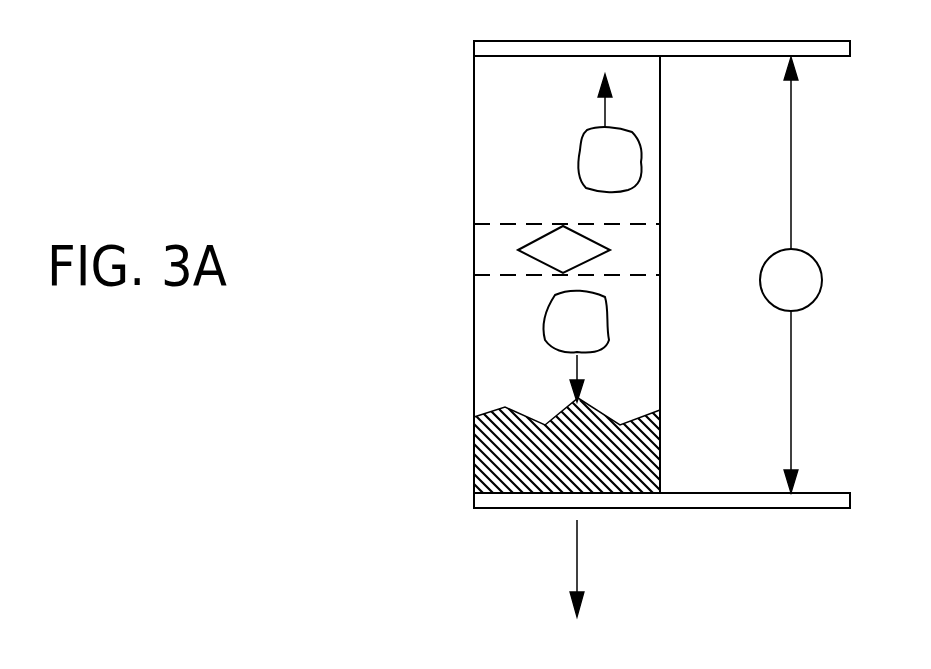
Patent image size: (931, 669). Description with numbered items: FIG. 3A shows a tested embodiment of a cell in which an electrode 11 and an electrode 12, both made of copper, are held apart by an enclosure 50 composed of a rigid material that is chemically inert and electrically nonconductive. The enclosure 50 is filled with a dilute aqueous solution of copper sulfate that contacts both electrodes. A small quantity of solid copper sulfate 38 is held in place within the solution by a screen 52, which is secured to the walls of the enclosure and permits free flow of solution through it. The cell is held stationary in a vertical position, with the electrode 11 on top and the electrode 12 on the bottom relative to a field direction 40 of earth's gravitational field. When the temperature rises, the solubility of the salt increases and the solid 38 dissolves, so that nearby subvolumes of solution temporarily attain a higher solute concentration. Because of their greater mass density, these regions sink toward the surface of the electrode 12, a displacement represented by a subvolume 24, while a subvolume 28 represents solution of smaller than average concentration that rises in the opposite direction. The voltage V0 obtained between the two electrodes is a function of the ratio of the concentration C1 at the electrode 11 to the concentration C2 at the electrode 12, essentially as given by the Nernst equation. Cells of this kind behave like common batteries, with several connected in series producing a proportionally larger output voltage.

The electrode 11 is at (697, 41).
The electrode 12 is at (690, 505).
The subvolume 24 is at (605, 307).
The subvolume 28 is at (641, 150).
The solid CuSO4 38 is at (605, 252).
The field direction 40 is at (577, 557).
The enclosure 50 is at (474, 365).
The screen 52 is at (522, 224).
The concentration at electrode 11 C1 is at (520, 93).
The concentration at electrode 12 C2 is at (522, 475).
The voltage V0 is at (791, 275).